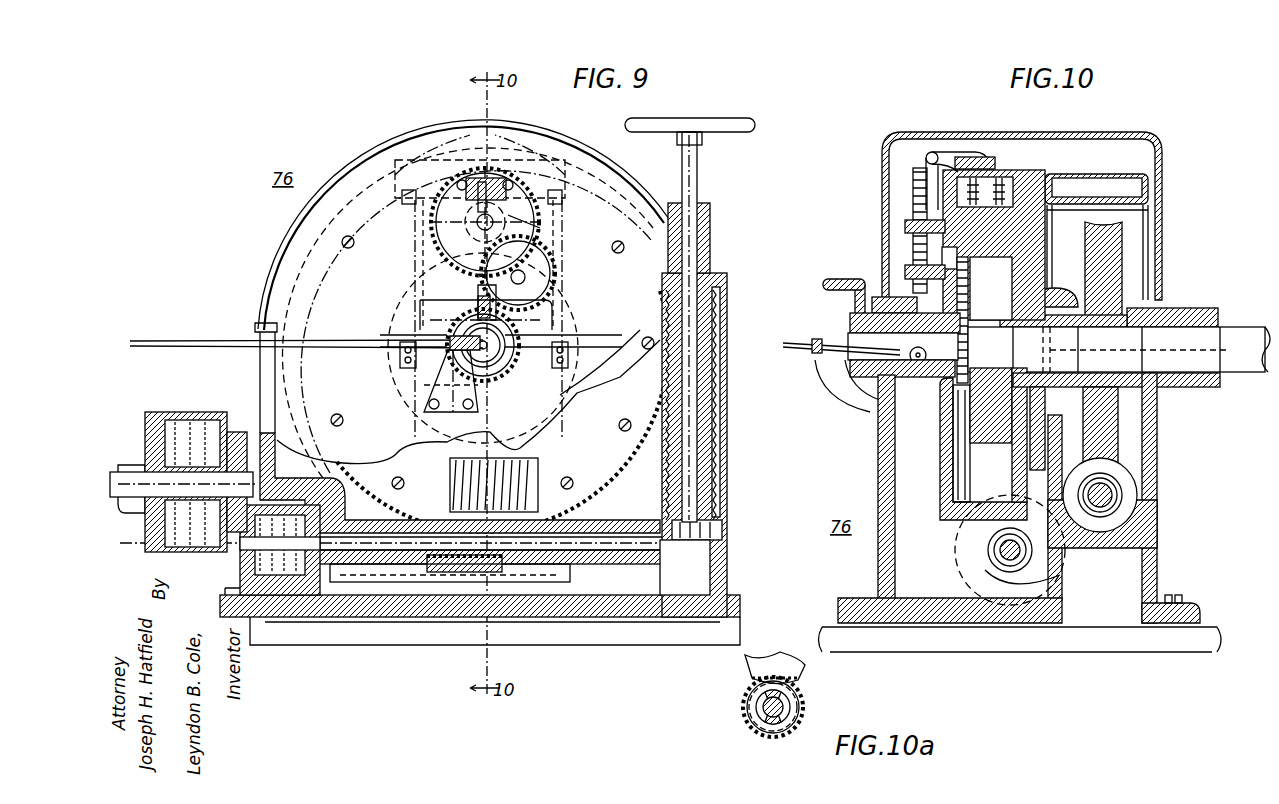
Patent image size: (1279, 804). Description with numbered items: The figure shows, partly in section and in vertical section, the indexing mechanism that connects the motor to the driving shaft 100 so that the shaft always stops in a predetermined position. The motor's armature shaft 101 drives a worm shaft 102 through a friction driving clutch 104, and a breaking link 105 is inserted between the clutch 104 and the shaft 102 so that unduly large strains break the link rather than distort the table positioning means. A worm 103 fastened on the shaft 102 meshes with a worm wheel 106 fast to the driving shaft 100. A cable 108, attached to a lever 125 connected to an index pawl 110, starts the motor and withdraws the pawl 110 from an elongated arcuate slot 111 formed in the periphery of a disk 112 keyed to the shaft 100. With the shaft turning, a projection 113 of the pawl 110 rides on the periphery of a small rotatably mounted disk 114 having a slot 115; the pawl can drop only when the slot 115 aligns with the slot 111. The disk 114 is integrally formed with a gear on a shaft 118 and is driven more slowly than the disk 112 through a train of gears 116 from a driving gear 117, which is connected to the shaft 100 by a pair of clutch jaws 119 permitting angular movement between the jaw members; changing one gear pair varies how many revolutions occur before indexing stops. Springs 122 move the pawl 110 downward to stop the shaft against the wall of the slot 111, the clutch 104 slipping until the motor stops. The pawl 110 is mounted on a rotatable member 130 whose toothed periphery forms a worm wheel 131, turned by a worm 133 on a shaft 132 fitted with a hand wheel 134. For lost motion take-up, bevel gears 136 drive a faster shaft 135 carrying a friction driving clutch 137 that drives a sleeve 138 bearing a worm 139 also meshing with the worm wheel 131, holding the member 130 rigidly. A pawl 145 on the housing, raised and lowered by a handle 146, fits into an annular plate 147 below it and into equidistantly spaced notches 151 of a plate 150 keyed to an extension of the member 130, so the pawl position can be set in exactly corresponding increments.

In FIG. 10, the driving shaft 100 is at (1235, 335).
In FIG. 10A, the driving shaft 100 is at (765, 709).
In FIG. 9, the armature shaft 101 is at (150, 432).
In FIG. 9, the worm shaft 102 is at (268, 450).
In FIG. 10, the worm shaft 102 is at (1120, 500).
In FIG. 9, the worm 103 is at (548, 458).
In FIG. 10, the worm 103 is at (1122, 490).
In FIG. 9, the friction driving clutch 104 is at (190, 430).
In FIG. 9, the breaking link 105 is at (240, 445).
In FIG. 10, the worm wheel 106 is at (1110, 265).
In FIG. 9, the cable 108 is at (155, 340).
In FIG. 10, the cable 108 is at (825, 365).
In FIG. 10, the index pawl 110 is at (1035, 187).
In FIG. 9, the elongated arcuate slot 111 is at (552, 273).
In FIG. 10, the disk 112 is at (940, 445).
In FIG. 9, the projection 113 is at (515, 195).
In FIG. 10, the projection 113 is at (960, 190).
In FIG. 9, the small rotatably mounted disk 114 is at (540, 228).
In FIG. 10, the small rotatably mounted disk 114 is at (915, 265).
In FIG. 9, the slot 115 is at (445, 215).
In FIG. 10, the train of gears 116 is at (915, 182).
In FIG. 10A, the train of gears 116 is at (748, 670).
In FIG. 10, the driving gear 117 is at (940, 372).
In FIG. 10A, the driving gear 117 is at (800, 695).
In FIG. 10, the shaft 118 is at (908, 226).
In FIG. 10, the clutch jaws 119 is at (1025, 282).
In FIG. 10A, the clutch jaws 119 is at (785, 712).
In FIG. 9, the springs 122 is at (485, 180).
In FIG. 10, the springs 122 is at (980, 157).
In FIG. 10, the lever 125 is at (942, 152).
In FIG. 10, the rotatable member 130 is at (1030, 242).
In FIG. 10, the worm wheel 131 is at (1020, 170).
In FIG. 9, the shaft 132 is at (697, 195).
In FIG. 9, the worm 133 is at (712, 335).
In FIG. 9, the hand wheel 134 is at (710, 125).
In FIG. 9, the shaft 135 is at (540, 552).
In FIG. 10, the shaft 135 is at (990, 550).
In FIG. 9, the bevel gears 136 is at (690, 541).
In FIG. 9, the friction driving clutch 137 is at (265, 597).
In FIG. 9, the sleeve 138 is at (382, 583).
In FIG. 9, the worm 139 is at (460, 572).
In FIG. 9, the pawl 145 is at (478, 296).
In FIG. 10, the pawl 145 is at (856, 305).
In FIG. 10, the handle 146 is at (832, 280).
In FIG. 10, the annular plate 147 is at (860, 322).
In FIG. 9, the plate 150 is at (505, 360).
In FIG. 10, the plate 150 is at (865, 393).
In FIG. 9, the notches 151 is at (430, 322).